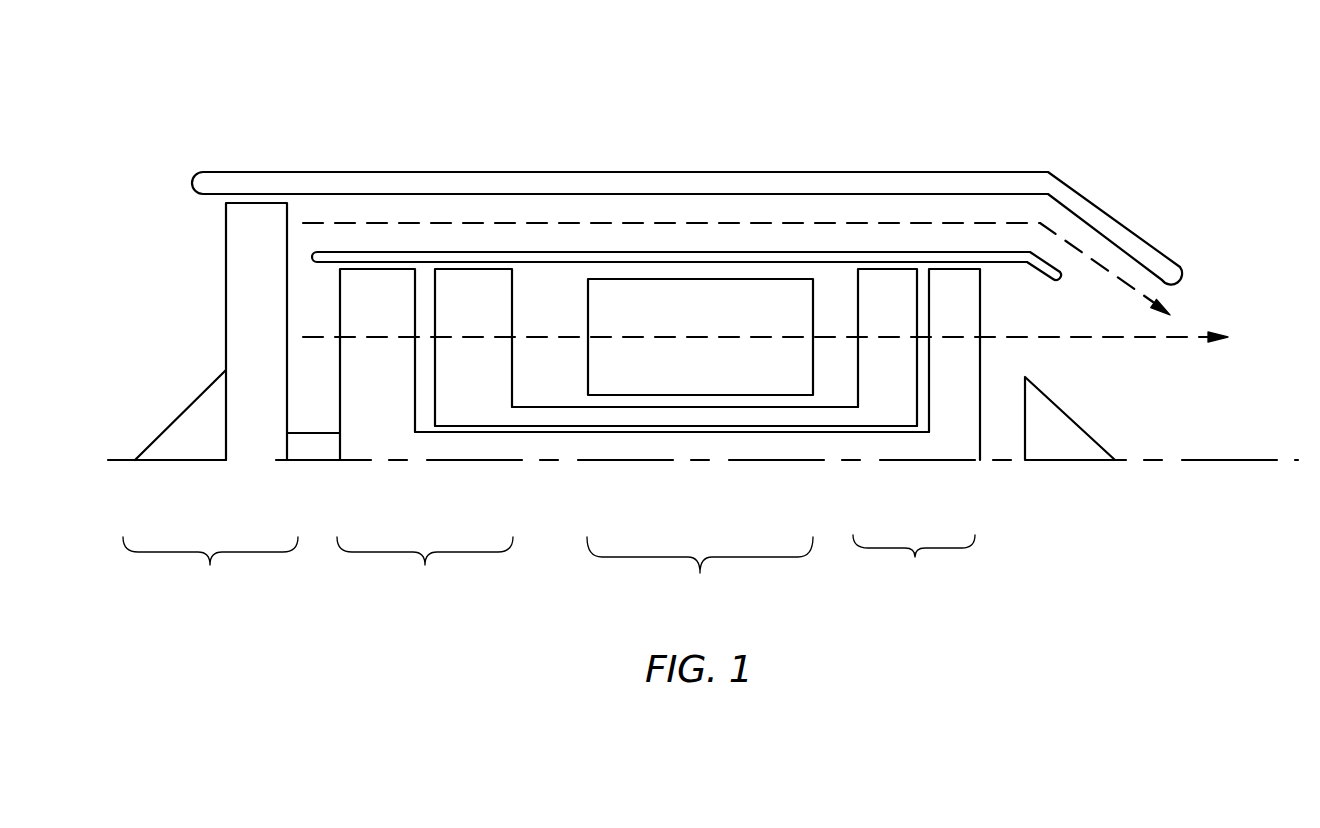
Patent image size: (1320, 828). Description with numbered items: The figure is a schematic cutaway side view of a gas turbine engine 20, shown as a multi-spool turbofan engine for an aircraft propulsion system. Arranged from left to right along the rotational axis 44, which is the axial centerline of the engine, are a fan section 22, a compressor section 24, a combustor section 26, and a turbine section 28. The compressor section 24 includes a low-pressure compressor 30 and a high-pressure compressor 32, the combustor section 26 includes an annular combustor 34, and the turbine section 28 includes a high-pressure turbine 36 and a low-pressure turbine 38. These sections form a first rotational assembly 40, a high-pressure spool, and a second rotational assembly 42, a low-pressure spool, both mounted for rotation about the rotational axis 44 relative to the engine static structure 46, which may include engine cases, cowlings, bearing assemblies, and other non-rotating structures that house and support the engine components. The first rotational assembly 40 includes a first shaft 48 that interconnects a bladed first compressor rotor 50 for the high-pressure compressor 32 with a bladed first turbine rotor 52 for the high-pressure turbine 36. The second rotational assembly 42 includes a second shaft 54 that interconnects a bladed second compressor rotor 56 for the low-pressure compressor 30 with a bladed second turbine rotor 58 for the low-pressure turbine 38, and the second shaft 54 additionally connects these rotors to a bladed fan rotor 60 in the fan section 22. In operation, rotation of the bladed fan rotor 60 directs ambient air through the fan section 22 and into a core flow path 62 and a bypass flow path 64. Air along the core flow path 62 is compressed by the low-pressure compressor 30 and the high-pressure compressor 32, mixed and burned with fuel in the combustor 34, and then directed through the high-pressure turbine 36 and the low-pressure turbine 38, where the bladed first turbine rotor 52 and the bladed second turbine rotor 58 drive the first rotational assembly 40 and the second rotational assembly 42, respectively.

The gas turbine engine 20 is at (1068, 110).
The fan section 22 is at (210, 566).
The compressor section 24 is at (425, 566).
The combustor section 26 is at (700, 568).
The turbine section 28 is at (914, 560).
The low-pressure compressor 30 is at (332, 377).
The high-pressure compressor 32 is at (518, 366).
The combustor 34 is at (689, 317).
The high-pressure turbine 36 is at (852, 378).
The low-pressure turbine 38 is at (987, 377).
The first rotational assembly 40 is at (478, 405).
The second rotational assembly 42 is at (915, 445).
The rotational axis 44 is at (1277, 460).
The engine static structure 46 is at (795, 252).
The first shaft 48 is at (603, 405).
The bladed first compressor rotor 50 is at (457, 317).
The bladed first turbine rotor 52 is at (875, 317).
The second shaft 54 is at (712, 437).
The bladed second compressor rotor 56 is at (364, 317).
The bladed second turbine rotor 58 is at (943, 317).
The bladed fan rotor 60 is at (239, 317).
The core flow path 62 is at (1128, 337).
The bypass flow path 64 is at (478, 223).